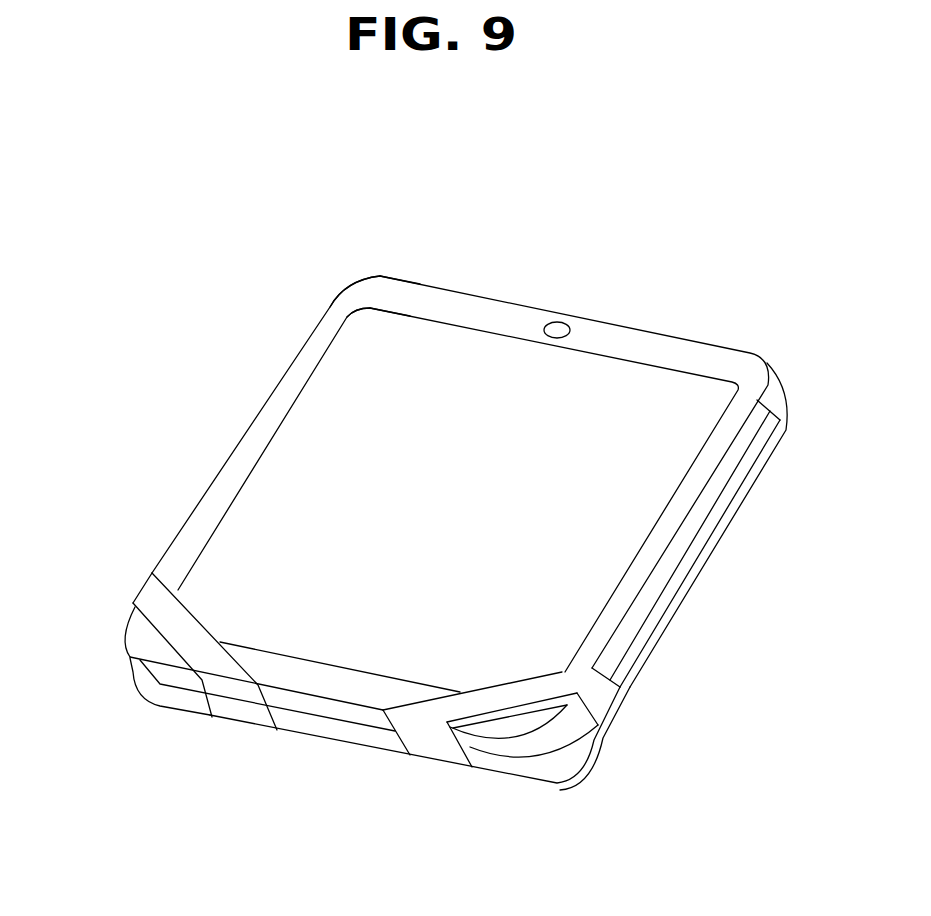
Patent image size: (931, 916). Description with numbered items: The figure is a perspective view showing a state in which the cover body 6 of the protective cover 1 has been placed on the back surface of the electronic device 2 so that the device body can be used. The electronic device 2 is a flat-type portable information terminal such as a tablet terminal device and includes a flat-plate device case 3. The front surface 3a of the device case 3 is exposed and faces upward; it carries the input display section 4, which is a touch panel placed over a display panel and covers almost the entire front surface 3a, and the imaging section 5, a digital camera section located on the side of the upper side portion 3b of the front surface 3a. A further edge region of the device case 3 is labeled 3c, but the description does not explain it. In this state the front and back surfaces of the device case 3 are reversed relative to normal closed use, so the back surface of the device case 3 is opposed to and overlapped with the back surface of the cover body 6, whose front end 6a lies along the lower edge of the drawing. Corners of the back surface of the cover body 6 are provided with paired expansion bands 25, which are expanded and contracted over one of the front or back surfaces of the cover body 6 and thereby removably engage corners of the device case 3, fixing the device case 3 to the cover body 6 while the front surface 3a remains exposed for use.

The protective cover 1 is at (671, 633).
The electronic device 2 is at (457, 274).
The device case 3 is at (527, 301).
The front surface 3a is at (623, 339).
The upper side portion 3b is at (705, 341).
The front face of frame 3c is at (321, 707).
The input display section 4 is at (327, 392).
The imaging section 5 is at (562, 327).
The cover body 6 is at (710, 560).
The front end 6a is at (178, 710).
The expansion bands 25 is at (173, 623).